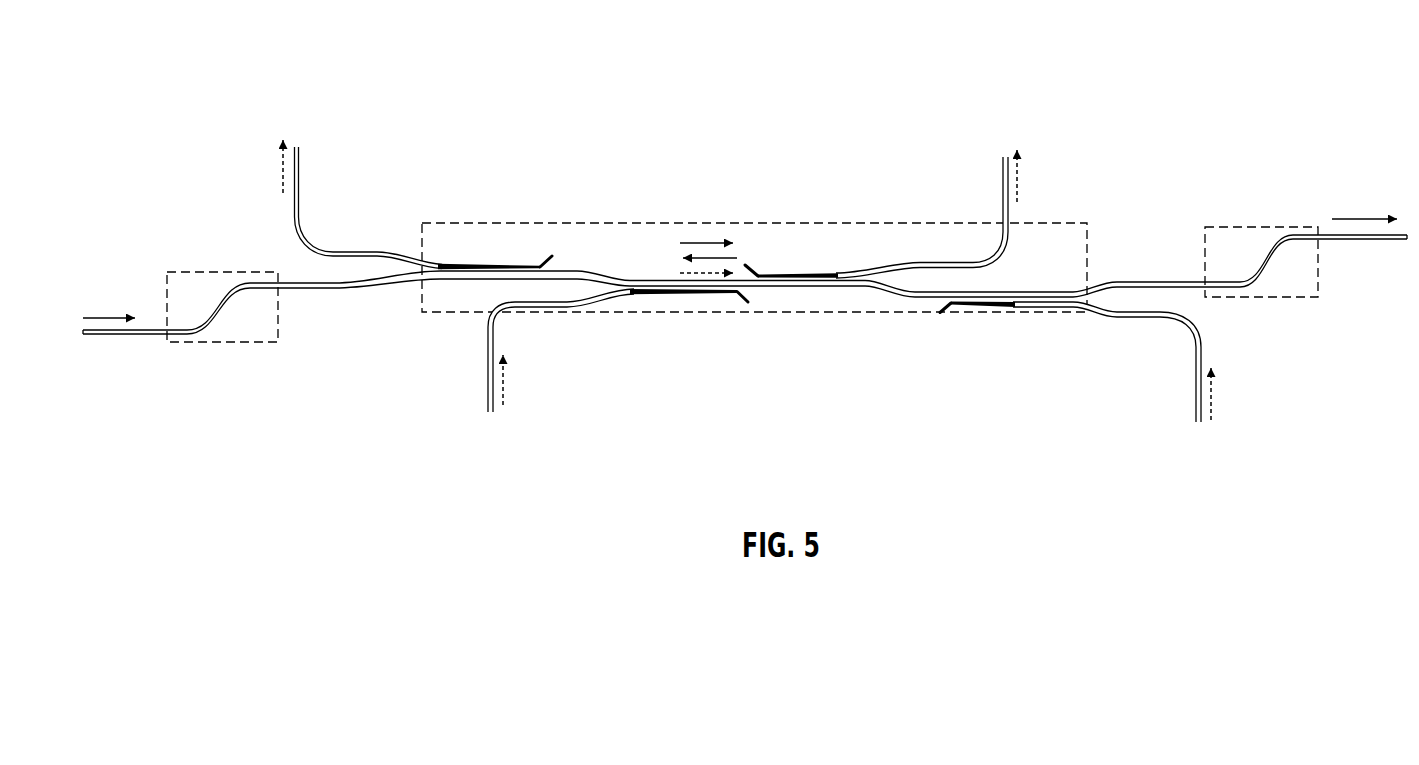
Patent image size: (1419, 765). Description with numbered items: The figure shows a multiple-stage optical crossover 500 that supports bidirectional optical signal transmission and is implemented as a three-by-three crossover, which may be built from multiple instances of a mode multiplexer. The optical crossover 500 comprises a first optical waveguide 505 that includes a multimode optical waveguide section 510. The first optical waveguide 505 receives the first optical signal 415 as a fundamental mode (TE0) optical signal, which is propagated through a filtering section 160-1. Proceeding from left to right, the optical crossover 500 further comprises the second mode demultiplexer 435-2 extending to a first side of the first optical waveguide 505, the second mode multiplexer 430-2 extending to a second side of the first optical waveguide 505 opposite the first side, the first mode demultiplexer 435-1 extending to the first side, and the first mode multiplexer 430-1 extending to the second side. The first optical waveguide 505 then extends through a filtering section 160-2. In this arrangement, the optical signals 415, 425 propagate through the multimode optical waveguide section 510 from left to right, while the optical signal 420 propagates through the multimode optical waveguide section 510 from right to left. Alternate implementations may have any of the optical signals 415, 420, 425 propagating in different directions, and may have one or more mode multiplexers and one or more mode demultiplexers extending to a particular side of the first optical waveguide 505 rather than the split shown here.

The optical crossover 500 is at (1292, 89).
The first optical signal 415 is at (100, 316).
The optical signal 420 is at (283, 164).
The optical signal 425 is at (503, 388).
The second mode demultiplexer 435-2 is at (305, 240).
The first mode demultiplexer 435-1 is at (1003, 207).
The second mode multiplexer 430-2 is at (488, 372).
The first mode multiplexer 430-1 is at (1186, 330).
The filtering section 160-1 is at (213, 342).
The filtering section 160-2 is at (1290, 297).
The multimode optical waveguide section 510 is at (798, 313).
The first optical waveguide 505 is at (926, 298).